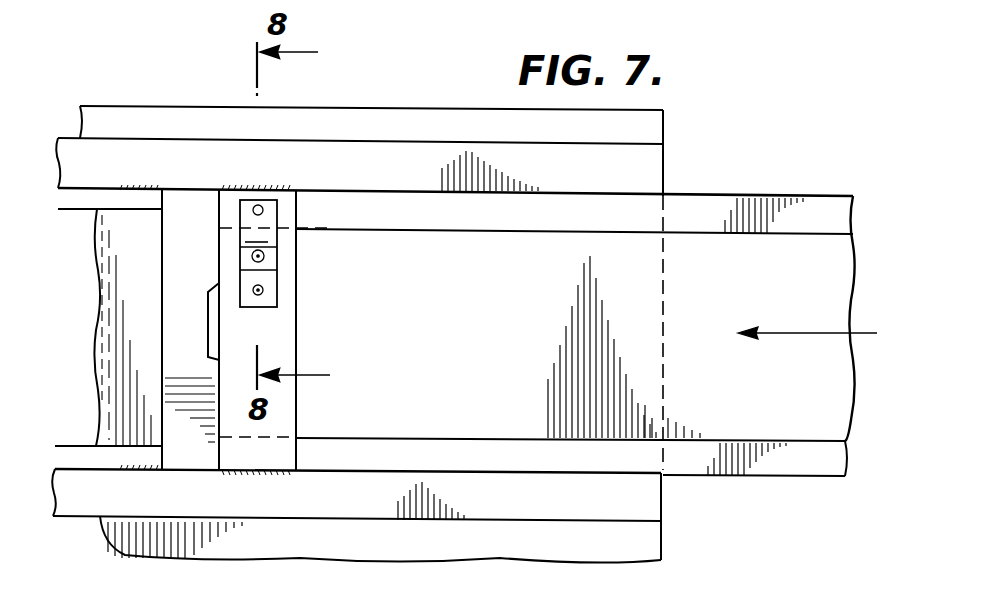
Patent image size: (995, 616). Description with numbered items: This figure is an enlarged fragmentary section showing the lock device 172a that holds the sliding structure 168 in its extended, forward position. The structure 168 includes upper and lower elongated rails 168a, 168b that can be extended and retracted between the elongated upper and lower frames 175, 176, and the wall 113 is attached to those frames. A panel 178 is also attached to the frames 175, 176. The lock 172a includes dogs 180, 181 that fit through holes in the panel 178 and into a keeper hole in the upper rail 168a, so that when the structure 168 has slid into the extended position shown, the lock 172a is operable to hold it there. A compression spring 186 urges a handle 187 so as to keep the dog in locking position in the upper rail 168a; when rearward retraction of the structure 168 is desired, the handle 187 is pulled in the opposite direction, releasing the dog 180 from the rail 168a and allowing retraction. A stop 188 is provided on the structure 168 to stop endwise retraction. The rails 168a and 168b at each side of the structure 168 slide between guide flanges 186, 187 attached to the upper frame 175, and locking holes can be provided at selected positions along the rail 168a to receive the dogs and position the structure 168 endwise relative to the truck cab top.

The wall 113 is at (157, 105).
The upper frame 175 is at (381, 162).
The lower frame 176 is at (362, 503).
The structure 168 is at (727, 190).
The upper rail 168a is at (688, 236).
The lower rail 168b is at (708, 478).
The lock device 172a is at (288, 267).
The panel 178 is at (283, 418).
The dog 180 is at (262, 212).
The dog 181 is at (263, 290).
The compression spring 186 is at (130, 205).
The handle 187 is at (77, 450).
The stop 188 is at (213, 312).